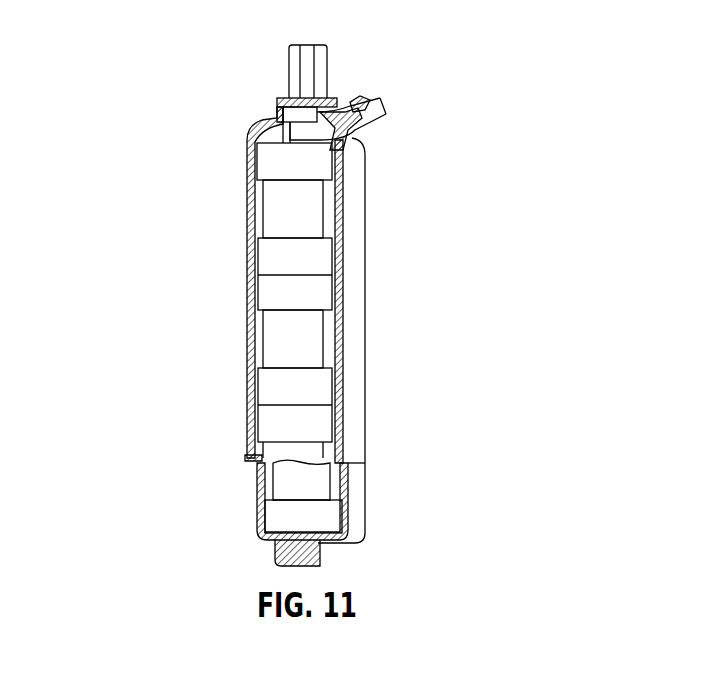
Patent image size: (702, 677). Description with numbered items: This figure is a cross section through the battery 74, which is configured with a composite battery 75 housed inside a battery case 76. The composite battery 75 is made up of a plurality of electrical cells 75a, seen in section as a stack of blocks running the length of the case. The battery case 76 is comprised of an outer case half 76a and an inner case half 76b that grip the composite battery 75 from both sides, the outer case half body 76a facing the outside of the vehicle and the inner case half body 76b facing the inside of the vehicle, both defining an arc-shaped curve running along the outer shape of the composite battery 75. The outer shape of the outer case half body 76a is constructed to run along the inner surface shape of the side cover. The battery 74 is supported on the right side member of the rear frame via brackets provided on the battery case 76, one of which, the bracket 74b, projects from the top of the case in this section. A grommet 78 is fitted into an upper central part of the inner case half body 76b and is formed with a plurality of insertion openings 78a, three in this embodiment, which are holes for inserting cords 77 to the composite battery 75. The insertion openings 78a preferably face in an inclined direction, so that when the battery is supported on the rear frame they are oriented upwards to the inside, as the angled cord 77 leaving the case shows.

The battery 74 is at (370, 242).
The bracket 74b is at (287, 68).
The composite battery 75 is at (248, 358).
The electrical cell 75a is at (270, 217).
The battery case 76 is at (378, 482).
The outer case half 76a is at (247, 325).
The inner case half 76b is at (342, 335).
The cord 77 is at (387, 100).
The grommet 78 is at (377, 128).
The insertion opening 78a is at (368, 98).